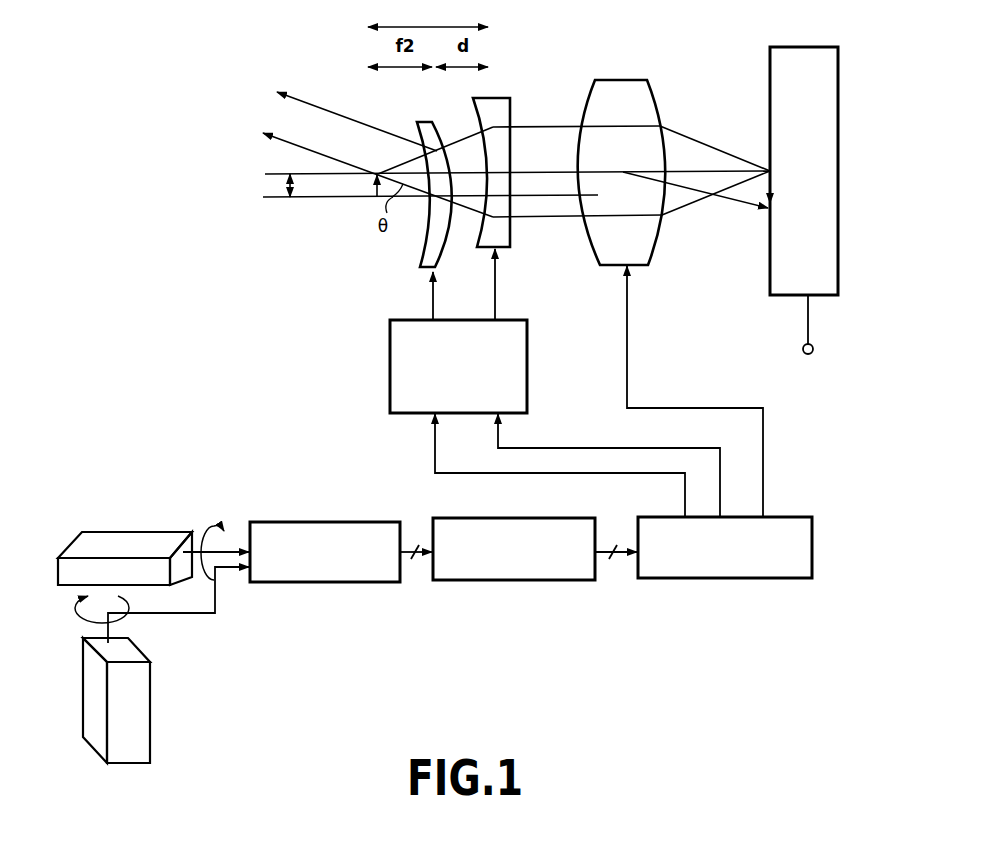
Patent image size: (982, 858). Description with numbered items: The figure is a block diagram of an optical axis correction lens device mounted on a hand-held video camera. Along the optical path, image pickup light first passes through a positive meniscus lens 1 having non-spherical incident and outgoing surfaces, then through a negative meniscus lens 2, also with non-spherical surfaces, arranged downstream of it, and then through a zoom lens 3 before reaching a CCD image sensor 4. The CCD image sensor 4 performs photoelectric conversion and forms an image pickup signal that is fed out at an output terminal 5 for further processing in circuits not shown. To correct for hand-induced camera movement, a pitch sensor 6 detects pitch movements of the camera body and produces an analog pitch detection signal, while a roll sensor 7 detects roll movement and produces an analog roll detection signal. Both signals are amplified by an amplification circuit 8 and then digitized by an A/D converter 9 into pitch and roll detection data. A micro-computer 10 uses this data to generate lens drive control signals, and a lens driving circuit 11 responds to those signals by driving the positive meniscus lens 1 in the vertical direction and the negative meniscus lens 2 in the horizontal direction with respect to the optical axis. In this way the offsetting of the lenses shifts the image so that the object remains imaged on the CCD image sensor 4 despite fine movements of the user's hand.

The positive meniscus lens 1 is at (428, 243).
The negative meniscus lens 2 is at (503, 110).
The zoom lens 3 is at (652, 243).
The CCD image sensor 4 is at (838, 150).
The output terminal 5 is at (808, 355).
The pitch sensor 6 is at (133, 535).
The roll sensor 7 is at (150, 720).
The amplification circuit 8 is at (325, 583).
The A/D converter 9 is at (515, 581).
The micro-computer 10 is at (715, 579).
The lens driving circuit 11 is at (390, 350).